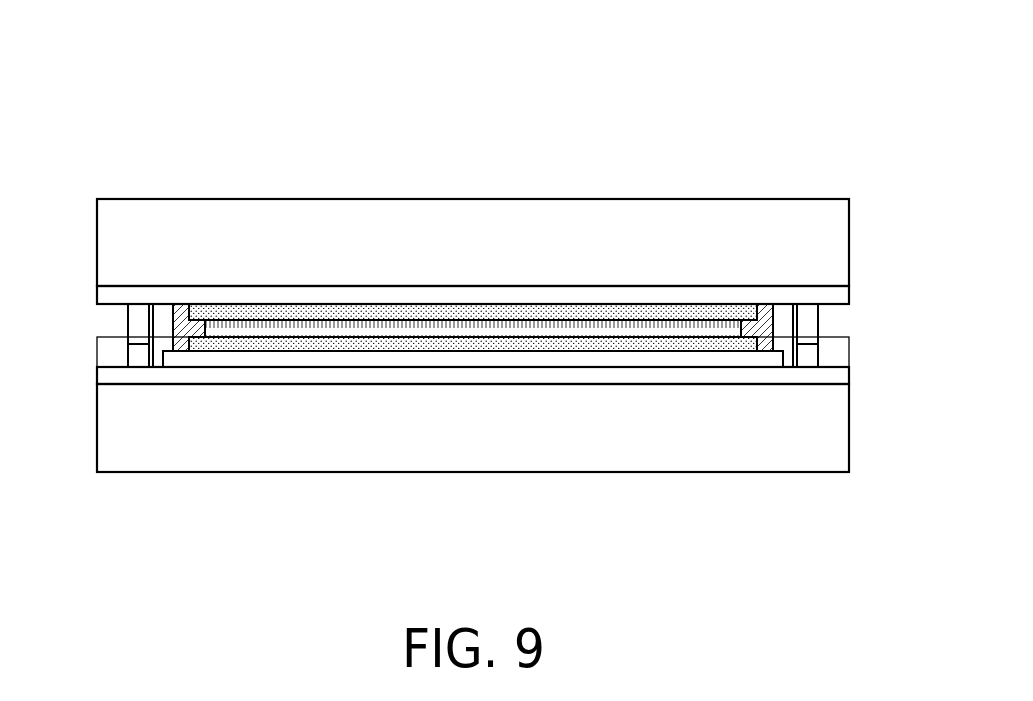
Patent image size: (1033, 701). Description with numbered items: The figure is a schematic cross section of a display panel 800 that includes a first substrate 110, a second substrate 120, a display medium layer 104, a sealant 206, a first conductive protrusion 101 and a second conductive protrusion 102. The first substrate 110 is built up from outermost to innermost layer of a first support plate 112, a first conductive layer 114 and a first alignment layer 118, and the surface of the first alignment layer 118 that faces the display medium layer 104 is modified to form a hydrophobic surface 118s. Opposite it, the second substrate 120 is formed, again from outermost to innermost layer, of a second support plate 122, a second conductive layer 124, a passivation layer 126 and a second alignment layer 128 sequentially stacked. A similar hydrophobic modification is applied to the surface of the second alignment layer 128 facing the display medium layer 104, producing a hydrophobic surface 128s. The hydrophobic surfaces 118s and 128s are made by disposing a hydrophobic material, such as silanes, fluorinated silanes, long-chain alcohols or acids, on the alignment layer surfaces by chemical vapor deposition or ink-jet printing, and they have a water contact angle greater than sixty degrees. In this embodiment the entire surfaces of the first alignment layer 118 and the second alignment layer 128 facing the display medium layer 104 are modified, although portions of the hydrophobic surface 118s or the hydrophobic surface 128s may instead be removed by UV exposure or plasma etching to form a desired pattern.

The display panel 800 is at (895, 563).
The first substrate 110 is at (740, 10).
The second substrate 120 is at (893, 10).
The first support plate 112 is at (830, 228).
The first conductive layer 114 is at (830, 296).
The first alignment layer 118 is at (386, 312).
The hydrophobic surface 118s is at (253, 315).
The second support plate 122 is at (830, 434).
The second conductive layer 124 is at (833, 378).
The passivation layer 126 is at (765, 361).
The second alignment layer 128 is at (538, 345).
The hydrophobic surface 128s is at (253, 342).
The display medium layer 104 is at (458, 328).
The sealant 206 is at (765, 328).
The first conductive protrusion 101 is at (138, 325).
The second conductive protrusion 102 is at (138, 359).